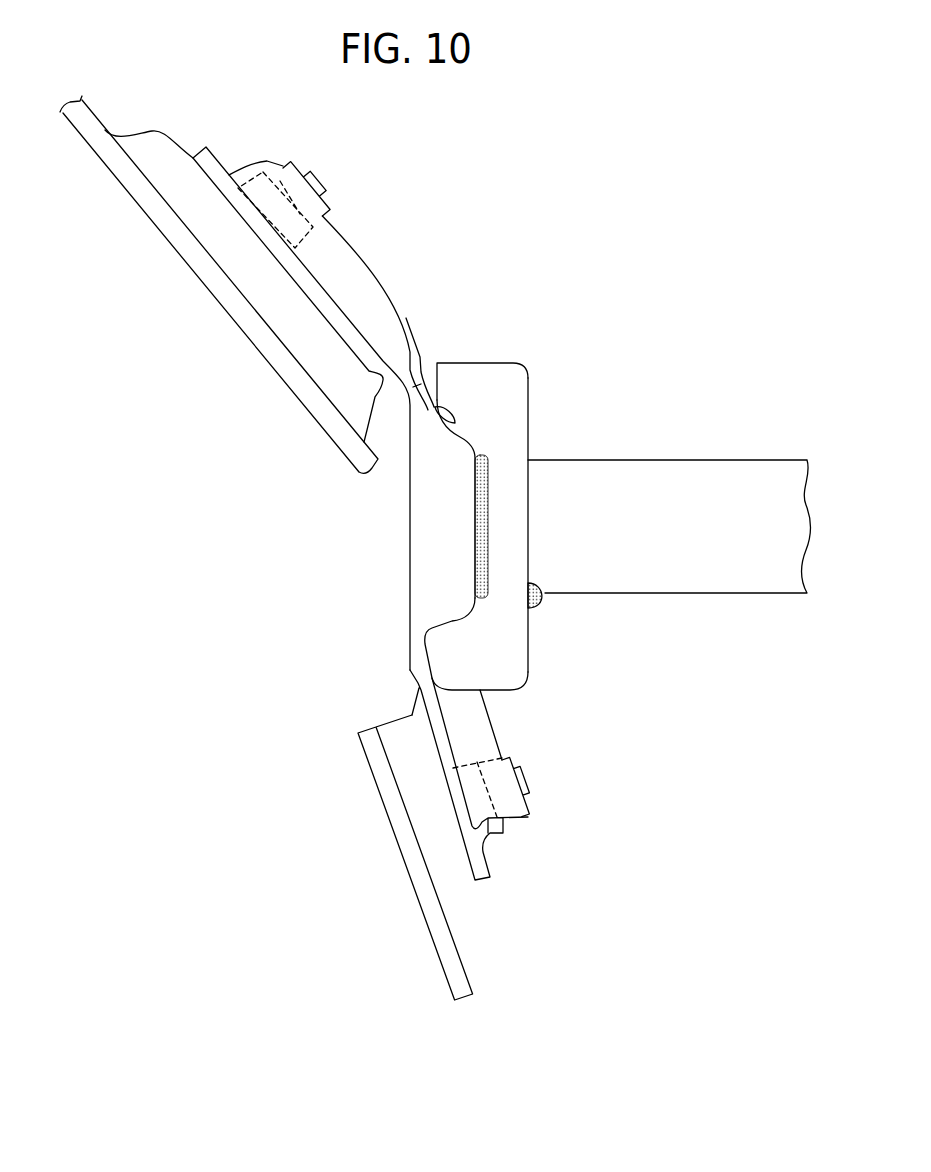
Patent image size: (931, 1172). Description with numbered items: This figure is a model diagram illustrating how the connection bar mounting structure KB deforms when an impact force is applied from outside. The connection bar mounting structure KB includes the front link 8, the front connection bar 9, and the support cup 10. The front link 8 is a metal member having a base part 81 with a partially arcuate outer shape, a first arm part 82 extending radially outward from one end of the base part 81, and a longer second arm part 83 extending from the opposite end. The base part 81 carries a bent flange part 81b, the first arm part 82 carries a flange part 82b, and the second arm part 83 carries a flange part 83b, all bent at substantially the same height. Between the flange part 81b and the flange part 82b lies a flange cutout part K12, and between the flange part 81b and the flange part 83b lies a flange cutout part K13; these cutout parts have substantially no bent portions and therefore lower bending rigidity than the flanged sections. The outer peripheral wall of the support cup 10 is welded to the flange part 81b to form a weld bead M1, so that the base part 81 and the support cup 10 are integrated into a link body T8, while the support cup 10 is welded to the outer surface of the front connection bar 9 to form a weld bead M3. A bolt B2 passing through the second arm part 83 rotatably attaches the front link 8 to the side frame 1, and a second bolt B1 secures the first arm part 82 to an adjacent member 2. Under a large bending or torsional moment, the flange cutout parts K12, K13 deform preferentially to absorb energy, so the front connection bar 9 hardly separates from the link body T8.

The side frame 1 is at (215, 297).
The second panel 2 is at (402, 853).
The front link 8 is at (407, 567).
The base part 81 is at (405, 518).
The flange part 81b is at (477, 448).
The first arm part 82 is at (437, 760).
The flange part 82b is at (488, 714).
The second arm part 83 is at (327, 318).
The flange part 83b is at (358, 250).
The front connection bar 9 is at (737, 458).
The support cup 10 is at (532, 523).
The bolt B1 is at (540, 776).
The bolt B2 is at (323, 173).
The weld bead M1 is at (483, 503).
The weld bead M3 is at (536, 608).
The flange cutout part K12 is at (379, 667).
The flange cutout part K13 is at (437, 343).
The connection bar mounting structure KB is at (508, 324).
The link body T8 is at (549, 341).